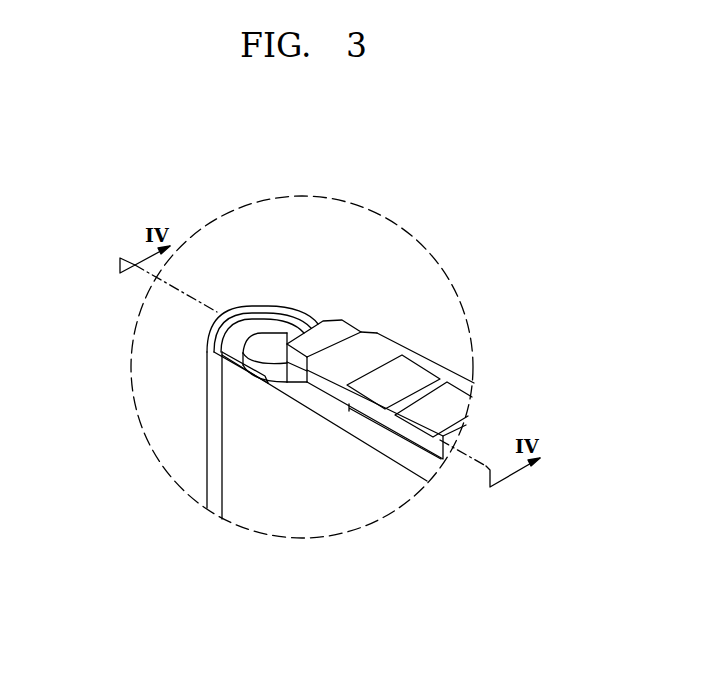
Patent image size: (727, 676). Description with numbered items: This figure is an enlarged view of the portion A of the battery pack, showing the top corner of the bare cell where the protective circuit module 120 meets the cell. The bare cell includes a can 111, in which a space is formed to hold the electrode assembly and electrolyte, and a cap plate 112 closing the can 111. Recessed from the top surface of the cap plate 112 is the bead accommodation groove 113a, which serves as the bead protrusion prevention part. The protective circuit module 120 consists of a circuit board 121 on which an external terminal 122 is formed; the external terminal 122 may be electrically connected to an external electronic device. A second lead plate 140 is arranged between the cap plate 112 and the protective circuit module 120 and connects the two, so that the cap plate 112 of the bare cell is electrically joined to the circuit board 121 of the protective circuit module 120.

The can 111 is at (230, 442).
The cap plate 112 is at (322, 398).
The bead accommodation groove 113a is at (222, 343).
The protective circuit module 120 is at (457, 168).
The circuit board 121 is at (347, 353).
The external terminal 122 is at (397, 380).
The second lead plate 140 is at (273, 345).
The portion A is at (463, 313).